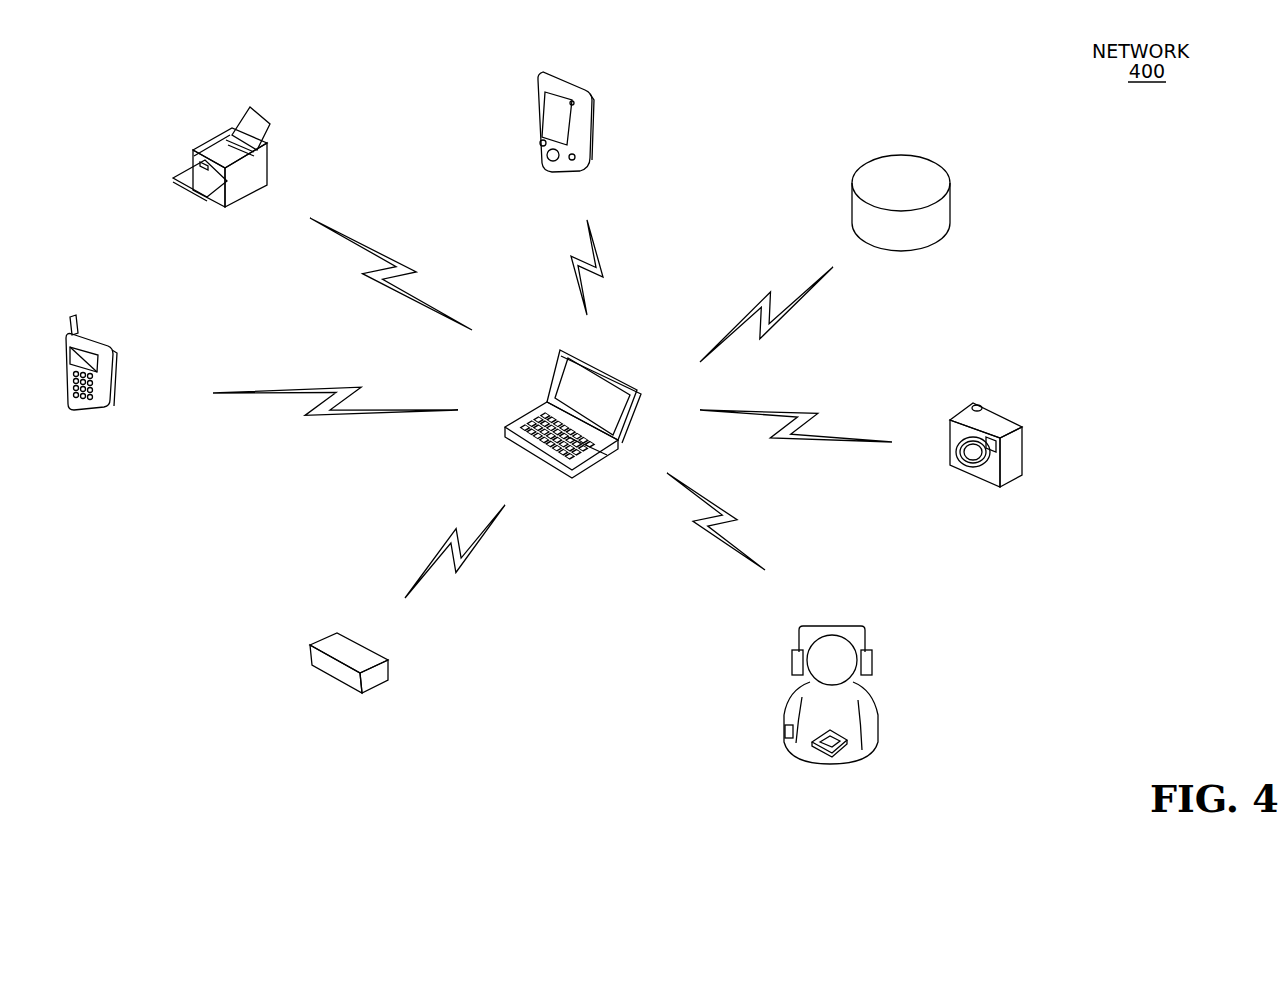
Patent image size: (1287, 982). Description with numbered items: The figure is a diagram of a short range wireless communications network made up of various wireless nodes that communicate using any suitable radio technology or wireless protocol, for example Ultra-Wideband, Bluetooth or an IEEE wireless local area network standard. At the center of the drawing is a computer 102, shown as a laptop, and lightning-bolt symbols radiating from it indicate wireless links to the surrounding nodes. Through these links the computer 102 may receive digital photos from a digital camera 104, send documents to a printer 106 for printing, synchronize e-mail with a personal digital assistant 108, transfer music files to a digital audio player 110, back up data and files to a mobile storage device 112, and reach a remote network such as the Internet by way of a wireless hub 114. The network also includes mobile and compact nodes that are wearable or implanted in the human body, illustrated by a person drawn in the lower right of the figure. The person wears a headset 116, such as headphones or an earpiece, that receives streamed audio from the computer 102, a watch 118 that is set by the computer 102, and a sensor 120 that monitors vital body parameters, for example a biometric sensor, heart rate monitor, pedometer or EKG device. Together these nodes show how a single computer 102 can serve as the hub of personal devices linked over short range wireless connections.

The computer 102 is at (548, 373).
The digital camera 104 is at (1020, 462).
The printer 106 is at (267, 178).
The personal digital assistant 108 is at (115, 378).
The digital audio player 110 is at (595, 150).
The mobile storage device 112 is at (950, 228).
The wireless hub 114 is at (388, 660).
The headset 116 is at (873, 660).
The watch 118 is at (784, 730).
The sensor 120 is at (857, 743).